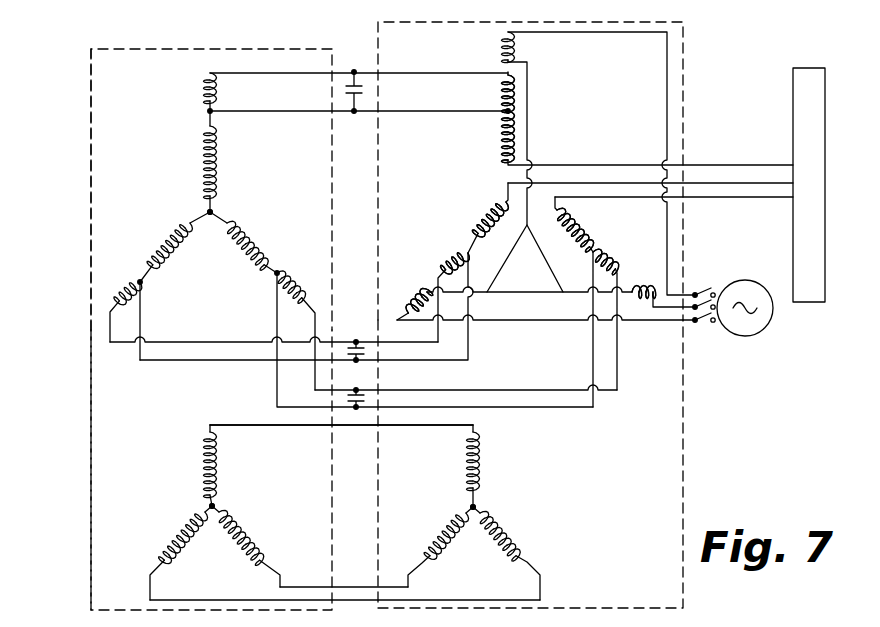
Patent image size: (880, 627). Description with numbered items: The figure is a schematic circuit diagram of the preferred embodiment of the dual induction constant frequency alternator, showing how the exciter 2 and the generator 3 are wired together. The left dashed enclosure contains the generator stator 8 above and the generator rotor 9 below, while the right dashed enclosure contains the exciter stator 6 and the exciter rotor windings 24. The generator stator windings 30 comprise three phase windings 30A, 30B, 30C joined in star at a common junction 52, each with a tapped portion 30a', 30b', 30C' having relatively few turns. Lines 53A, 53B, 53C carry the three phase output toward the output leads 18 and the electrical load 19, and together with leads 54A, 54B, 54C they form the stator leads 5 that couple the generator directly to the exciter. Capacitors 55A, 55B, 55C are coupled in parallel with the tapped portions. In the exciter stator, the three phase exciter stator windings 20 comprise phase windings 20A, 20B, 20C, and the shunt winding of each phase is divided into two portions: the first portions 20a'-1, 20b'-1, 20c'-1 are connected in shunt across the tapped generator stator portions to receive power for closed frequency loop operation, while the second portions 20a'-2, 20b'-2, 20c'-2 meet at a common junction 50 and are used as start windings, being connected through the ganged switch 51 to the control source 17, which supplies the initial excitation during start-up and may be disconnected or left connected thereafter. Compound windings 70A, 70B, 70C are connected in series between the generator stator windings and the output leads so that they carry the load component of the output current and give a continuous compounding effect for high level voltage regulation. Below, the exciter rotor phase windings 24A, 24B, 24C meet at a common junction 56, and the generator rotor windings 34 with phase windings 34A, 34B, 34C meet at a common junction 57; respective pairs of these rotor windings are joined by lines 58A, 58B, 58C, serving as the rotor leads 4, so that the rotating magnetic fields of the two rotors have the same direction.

The exciter 2 is at (376, 45).
The generator 3 is at (130, 48).
The rotor leads 4 is at (233, 419).
The stator leads 5 is at (331, 79).
The exciter stator 6 is at (688, 58).
The generator stator 8 is at (88, 120).
The generator rotor 9 is at (88, 490).
The control source 17 is at (767, 326).
The output leads 18 is at (752, 162).
The electrical load 19 is at (810, 68).
The exciter stator windings 20 is at (542, 145).
The phase winding 20A is at (531, 113).
The phase winding 20B is at (412, 242).
The phase winding 20C is at (569, 326).
The shunt winding portion 20a'-1 is at (463, 94).
The shunt winding portion 20a'-2 is at (599, 163).
The shunt winding portion 20b'-1 is at (442, 238).
The shunt winding portion 20b'-2 is at (410, 283).
The shunt winding portion 20c'-1 is at (624, 253).
The shunt winding portion 20c'-2 is at (648, 319).
The compound winding 70A is at (501, 140).
The compound winding 70B is at (500, 212).
The compound winding 70C is at (576, 222).
The exciter rotor windings 24 is at (486, 478).
The exciter rotor phase winding 24A is at (465, 462).
The exciter rotor phase winding 24B is at (428, 548).
The exciter rotor phase winding 24C is at (510, 540).
The generator stator windings 30 is at (160, 145).
The generator stator phase winding 30A is at (200, 138).
The generator stator phase winding 30B is at (172, 236).
The generator stator phase winding 30C is at (247, 228).
The tapped portion 30a' is at (235, 88).
The tapped portion 30b' is at (90, 309).
The tapped portion 30C' is at (293, 312).
The generator rotor windings 34 is at (196, 483).
The generator rotor phase winding 34A is at (220, 460).
The generator rotor phase winding 34B is at (172, 543).
The generator rotor phase winding 34C is at (246, 540).
The common junction 50 is at (527, 226).
The ganged switch 51 is at (706, 328).
The common junction 52 is at (210, 215).
The line 53A is at (252, 112).
The line 53B is at (141, 313).
The line 53C is at (276, 313).
The lead 54A is at (232, 72).
The lead 54B is at (122, 344).
The lead 54C is at (319, 300).
The capacitor 55A is at (347, 90).
The capacitor 55B is at (351, 341).
The capacitor 55C is at (362, 396).
The common junction 56 is at (478, 507).
The common junction 57 is at (216, 507).
The line 58A is at (310, 426).
The line 58B is at (183, 599).
The line 58C is at (308, 586).